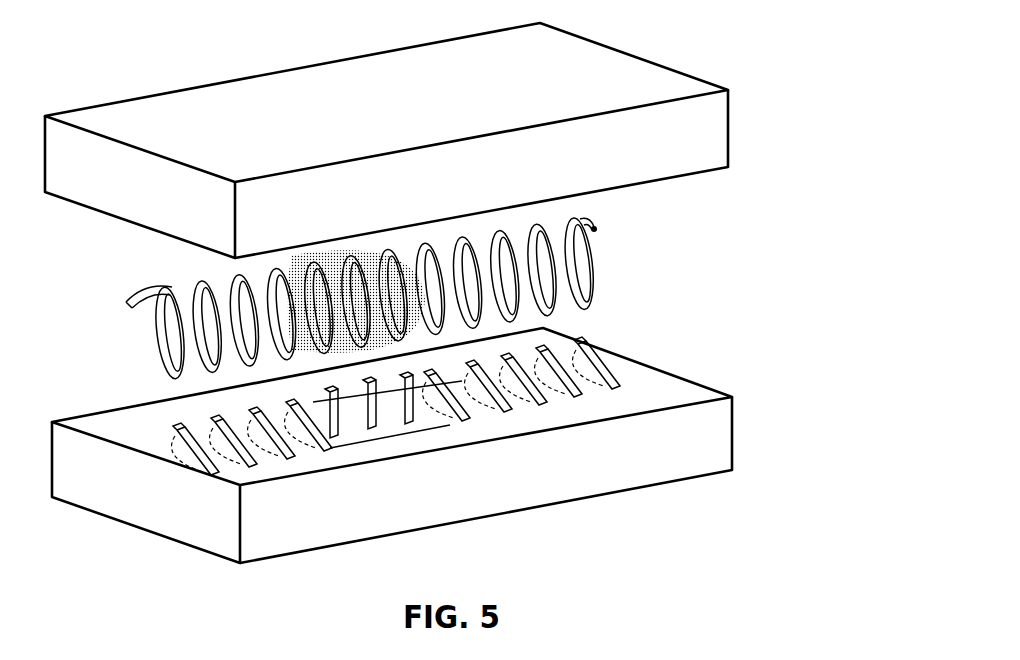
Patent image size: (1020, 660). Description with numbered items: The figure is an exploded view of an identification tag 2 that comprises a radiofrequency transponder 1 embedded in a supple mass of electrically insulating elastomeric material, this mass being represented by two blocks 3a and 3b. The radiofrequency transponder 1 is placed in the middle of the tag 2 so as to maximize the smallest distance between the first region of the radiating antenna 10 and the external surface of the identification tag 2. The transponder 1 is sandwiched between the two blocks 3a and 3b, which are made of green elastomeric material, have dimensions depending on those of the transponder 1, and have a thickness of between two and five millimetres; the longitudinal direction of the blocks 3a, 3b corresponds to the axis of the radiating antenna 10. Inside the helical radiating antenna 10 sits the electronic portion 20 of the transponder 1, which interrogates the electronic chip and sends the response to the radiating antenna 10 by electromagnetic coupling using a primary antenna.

The radiofrequency transponder 1 is at (415, 298).
The identification tag 2 is at (400, 284).
The block 3a is at (222, 158).
The block 3b is at (631, 468).
The radiating antenna 10 is at (168, 351).
The electronic portion 20 is at (320, 277).